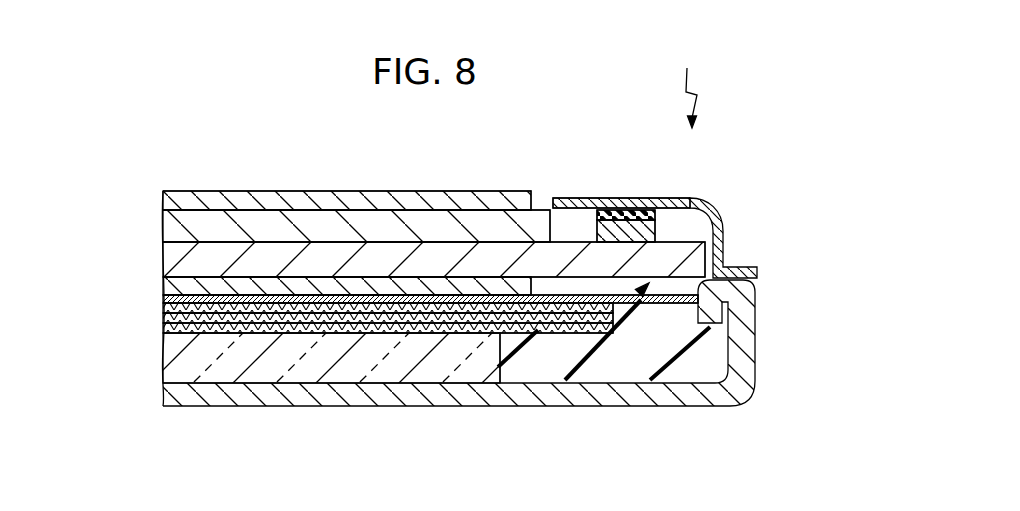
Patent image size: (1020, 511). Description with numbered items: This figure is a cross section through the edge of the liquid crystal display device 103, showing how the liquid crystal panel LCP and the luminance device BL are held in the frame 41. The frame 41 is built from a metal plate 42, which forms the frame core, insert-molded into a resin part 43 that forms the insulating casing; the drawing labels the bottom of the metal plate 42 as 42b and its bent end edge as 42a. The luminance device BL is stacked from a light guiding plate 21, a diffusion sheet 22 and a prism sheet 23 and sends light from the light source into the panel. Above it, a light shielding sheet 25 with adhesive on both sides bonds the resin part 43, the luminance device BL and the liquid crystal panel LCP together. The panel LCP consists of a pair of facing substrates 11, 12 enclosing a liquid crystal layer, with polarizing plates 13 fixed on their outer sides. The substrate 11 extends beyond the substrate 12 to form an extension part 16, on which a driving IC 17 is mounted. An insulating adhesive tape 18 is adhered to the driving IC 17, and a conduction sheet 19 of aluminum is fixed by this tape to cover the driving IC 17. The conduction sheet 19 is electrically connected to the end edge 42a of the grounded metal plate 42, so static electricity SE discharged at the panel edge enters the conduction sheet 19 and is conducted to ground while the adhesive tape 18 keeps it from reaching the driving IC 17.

The liquid crystal display device 103 is at (762, 99).
The liquid crystal panel LCP is at (103, 182).
The luminance device BL is at (103, 300).
The static electricity SE is at (685, 83).
The substrate 11 is at (170, 262).
The substrate 12 is at (172, 226).
The polarizing plate 13 is at (170, 201).
The extension part 16 is at (634, 300).
The driving IC 17 is at (690, 206).
The adhesive tape 18 is at (640, 211).
The conduction sheet 19 is at (588, 206).
The light guiding plate 21 is at (175, 363).
The diffusion sheet 22 is at (165, 324).
The prism sheet 23 is at (165, 307).
The light shielding sheet 25 is at (163, 298).
The frame 41 is at (768, 326).
The metal plate 42 is at (418, 400).
The end edge 42a is at (740, 282).
The bottom portion of frame 42b is at (300, 407).
The resin part 43 is at (533, 368).